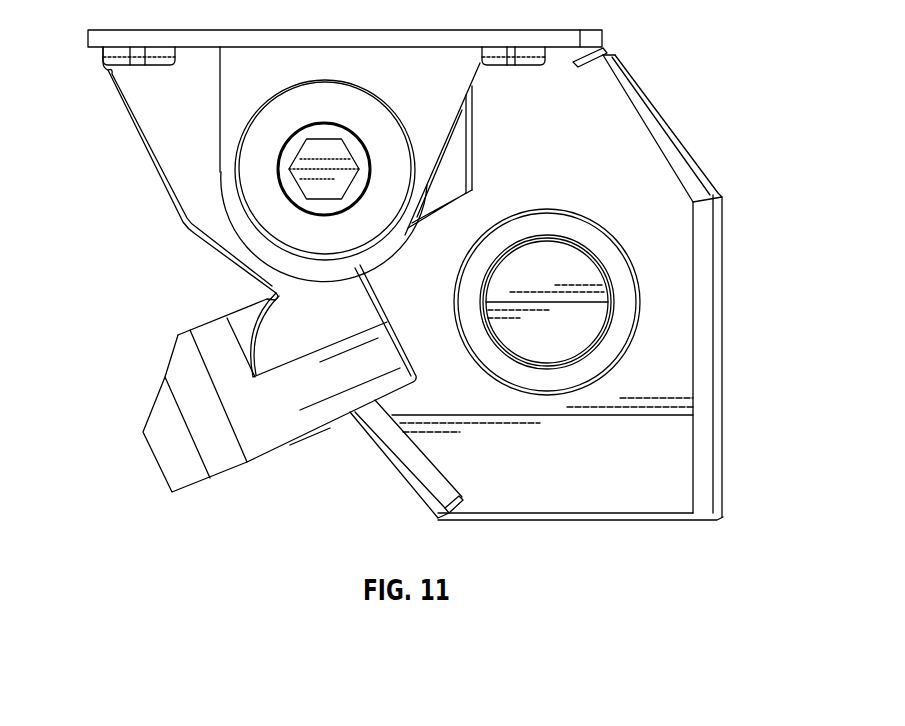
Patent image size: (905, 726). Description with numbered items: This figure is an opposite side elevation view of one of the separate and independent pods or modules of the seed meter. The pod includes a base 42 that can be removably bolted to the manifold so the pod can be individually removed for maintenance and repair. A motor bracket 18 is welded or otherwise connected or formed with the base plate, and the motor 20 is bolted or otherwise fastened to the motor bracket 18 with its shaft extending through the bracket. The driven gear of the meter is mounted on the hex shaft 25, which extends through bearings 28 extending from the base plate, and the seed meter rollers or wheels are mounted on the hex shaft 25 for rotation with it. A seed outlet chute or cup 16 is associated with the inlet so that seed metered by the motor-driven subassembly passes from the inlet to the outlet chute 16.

The seed outlet chute 16 is at (172, 352).
The motor bracket 18 is at (677, 308).
The motor 20 is at (562, 273).
The hex shaft 25 is at (313, 152).
The bearings 28 is at (255, 172).
The base 42 is at (150, 112).